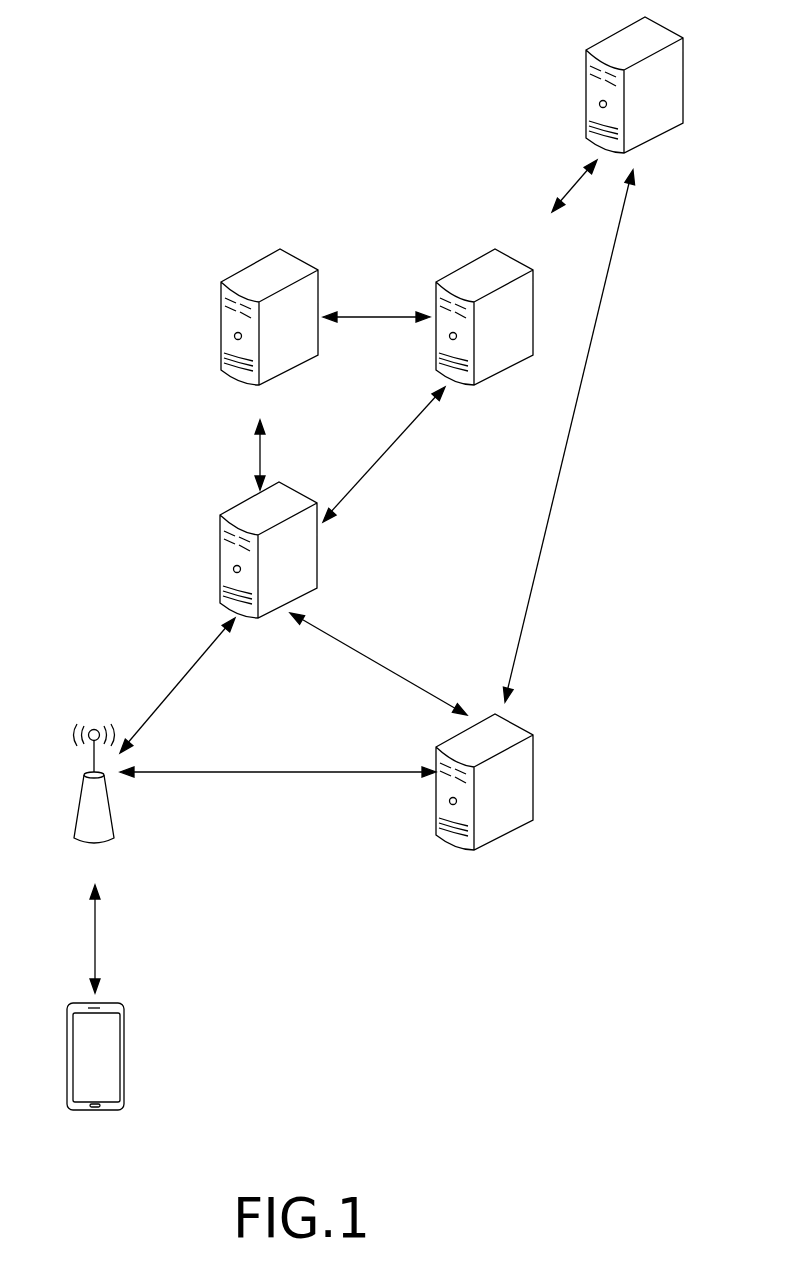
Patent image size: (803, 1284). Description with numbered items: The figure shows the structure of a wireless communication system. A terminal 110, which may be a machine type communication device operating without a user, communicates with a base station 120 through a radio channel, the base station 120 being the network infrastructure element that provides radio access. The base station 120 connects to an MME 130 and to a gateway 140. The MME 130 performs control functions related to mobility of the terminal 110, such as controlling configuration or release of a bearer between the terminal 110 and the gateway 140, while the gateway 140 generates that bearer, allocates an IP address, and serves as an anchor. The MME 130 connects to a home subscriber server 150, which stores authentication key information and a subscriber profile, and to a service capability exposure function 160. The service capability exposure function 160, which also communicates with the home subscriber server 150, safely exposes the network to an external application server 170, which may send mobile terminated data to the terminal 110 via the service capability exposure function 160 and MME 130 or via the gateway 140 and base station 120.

The terminal 110 is at (123, 1007).
The base station 120 is at (113, 824).
The MME 130 is at (296, 490).
The gateway (GW) 140 is at (516, 726).
The home subscriber server (HSS) 150 is at (300, 259).
The service capability exposure function (SCEF) 160 is at (515, 259).
The application server (AS) 170 is at (665, 27).